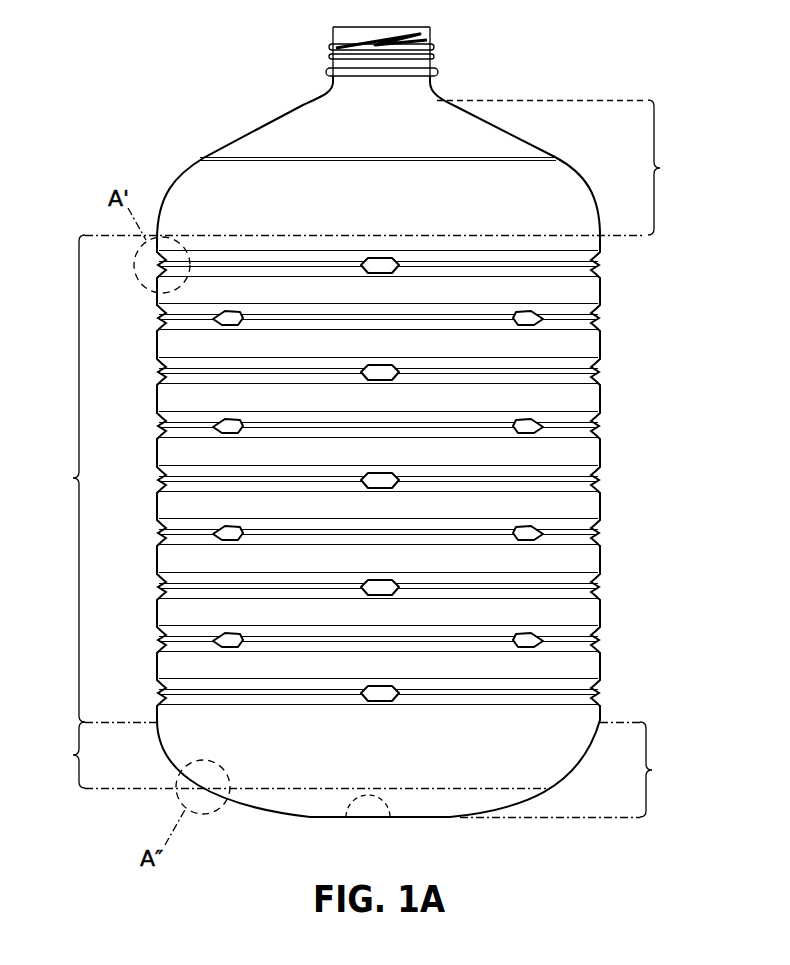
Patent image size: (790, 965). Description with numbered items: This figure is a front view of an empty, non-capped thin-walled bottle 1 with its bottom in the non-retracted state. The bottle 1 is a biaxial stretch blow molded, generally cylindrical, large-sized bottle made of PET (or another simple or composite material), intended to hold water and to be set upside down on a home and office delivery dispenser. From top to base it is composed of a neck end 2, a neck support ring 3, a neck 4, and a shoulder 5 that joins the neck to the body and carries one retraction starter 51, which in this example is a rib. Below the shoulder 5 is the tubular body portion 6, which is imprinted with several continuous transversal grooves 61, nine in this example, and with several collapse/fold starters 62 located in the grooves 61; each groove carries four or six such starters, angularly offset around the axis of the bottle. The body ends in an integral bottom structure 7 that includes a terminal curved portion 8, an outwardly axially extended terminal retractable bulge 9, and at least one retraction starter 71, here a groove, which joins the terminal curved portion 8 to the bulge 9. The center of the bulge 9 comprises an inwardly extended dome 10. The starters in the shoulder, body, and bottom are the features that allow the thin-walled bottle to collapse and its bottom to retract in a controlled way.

The thin-walled bottle 1 is at (642, 518).
The neck end 2 is at (334, 50).
The neck support ring 3 is at (437, 72).
The neck 4 is at (330, 80).
The shoulder 5 is at (381, 168).
The retraction starter 51 is at (553, 158).
The tubular body portion 6 is at (64, 478).
The transversal grooves 61 is at (648, 622).
The collapse/fold starters 62 is at (538, 533).
The integral bottom structure 7 is at (568, 770).
The retraction starter 71 is at (480, 790).
The terminal curved portion 8 is at (298, 755).
The terminal retractable bulge 9 is at (257, 808).
The dome 10 is at (370, 818).